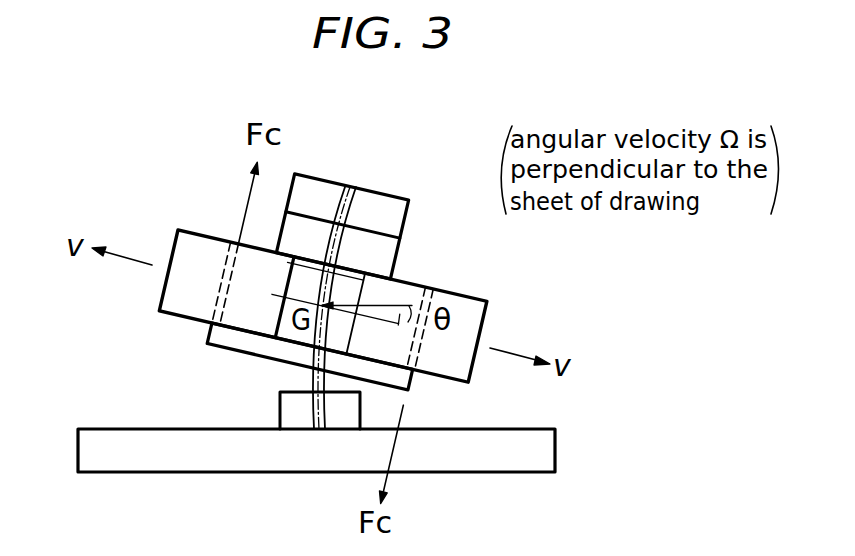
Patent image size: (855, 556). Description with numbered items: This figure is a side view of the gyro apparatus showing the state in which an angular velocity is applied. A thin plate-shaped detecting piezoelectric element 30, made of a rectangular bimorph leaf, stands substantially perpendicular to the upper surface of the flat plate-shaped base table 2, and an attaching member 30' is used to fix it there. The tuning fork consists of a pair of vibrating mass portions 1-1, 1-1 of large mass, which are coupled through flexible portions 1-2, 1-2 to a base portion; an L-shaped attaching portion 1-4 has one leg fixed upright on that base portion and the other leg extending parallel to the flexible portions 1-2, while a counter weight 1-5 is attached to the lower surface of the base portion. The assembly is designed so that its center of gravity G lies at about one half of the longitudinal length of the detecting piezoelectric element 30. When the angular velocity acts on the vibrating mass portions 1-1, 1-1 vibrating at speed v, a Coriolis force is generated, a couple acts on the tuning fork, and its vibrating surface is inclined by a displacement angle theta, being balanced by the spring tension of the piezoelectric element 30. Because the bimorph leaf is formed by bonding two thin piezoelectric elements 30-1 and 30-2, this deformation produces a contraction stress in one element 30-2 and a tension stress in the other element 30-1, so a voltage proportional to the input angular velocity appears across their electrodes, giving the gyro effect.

The vibrating mass portion 1-1 is at (181, 253).
The flexible portion 1-2 is at (238, 243).
The L-shaped attaching portion 1-4 is at (405, 213).
The counter weight 1-5 is at (212, 335).
The base table 2 is at (514, 474).
The piezoelectric element 30 is at (379, 244).
The piezoelectric element 30-1 is at (342, 201).
The piezoelectric element 30-2 is at (358, 206).
The attaching member 30' is at (291, 405).